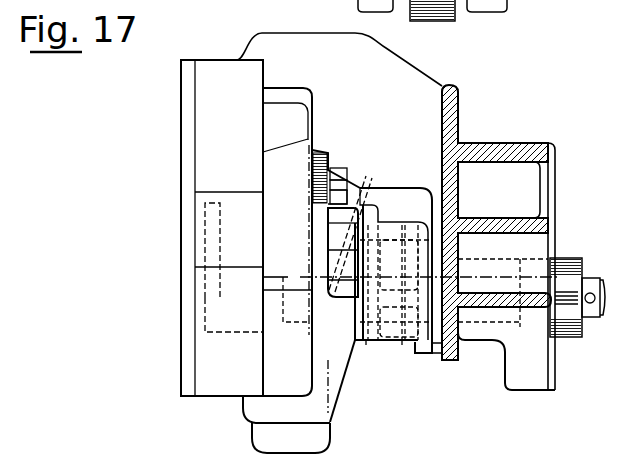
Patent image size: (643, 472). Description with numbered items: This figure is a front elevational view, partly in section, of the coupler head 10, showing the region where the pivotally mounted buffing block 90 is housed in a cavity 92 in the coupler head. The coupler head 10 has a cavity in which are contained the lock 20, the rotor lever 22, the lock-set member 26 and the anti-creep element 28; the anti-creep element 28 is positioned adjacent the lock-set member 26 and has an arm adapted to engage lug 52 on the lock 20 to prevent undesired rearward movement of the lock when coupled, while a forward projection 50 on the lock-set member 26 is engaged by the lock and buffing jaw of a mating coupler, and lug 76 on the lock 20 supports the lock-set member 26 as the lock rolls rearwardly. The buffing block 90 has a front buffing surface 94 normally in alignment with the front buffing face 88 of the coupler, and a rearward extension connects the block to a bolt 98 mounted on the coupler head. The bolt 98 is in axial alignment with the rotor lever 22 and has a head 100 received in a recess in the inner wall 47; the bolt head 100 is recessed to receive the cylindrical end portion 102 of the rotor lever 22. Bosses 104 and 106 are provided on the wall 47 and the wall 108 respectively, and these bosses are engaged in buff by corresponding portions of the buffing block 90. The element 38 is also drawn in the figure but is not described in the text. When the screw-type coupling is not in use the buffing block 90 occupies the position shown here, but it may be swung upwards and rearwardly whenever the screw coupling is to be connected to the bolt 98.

The coupler head 10 is at (277, 31).
The lock 20 is at (269, 160).
The rotor lever 22 is at (205, 315).
The slot 38 is at (210, 255).
The anti-creep element 28 is at (337, 175).
The lock-set member 26 is at (358, 177).
The lug 52 is at (320, 206).
The forward projection 50 is at (318, 225).
The inner wall 47 is at (318, 245).
The lug 76 is at (318, 258).
The front buffing face 88 is at (404, 90).
The cavity 92 is at (400, 205).
The cylindrical end portion 102 is at (310, 326).
The bolt head 100 is at (310, 346).
The boss 104 is at (363, 268).
The boss 106 is at (418, 248).
The buffing block 90 is at (368, 344).
The front buffing surface 94 is at (389, 330).
The wall 108 is at (444, 358).
The bolt 98 is at (588, 277).